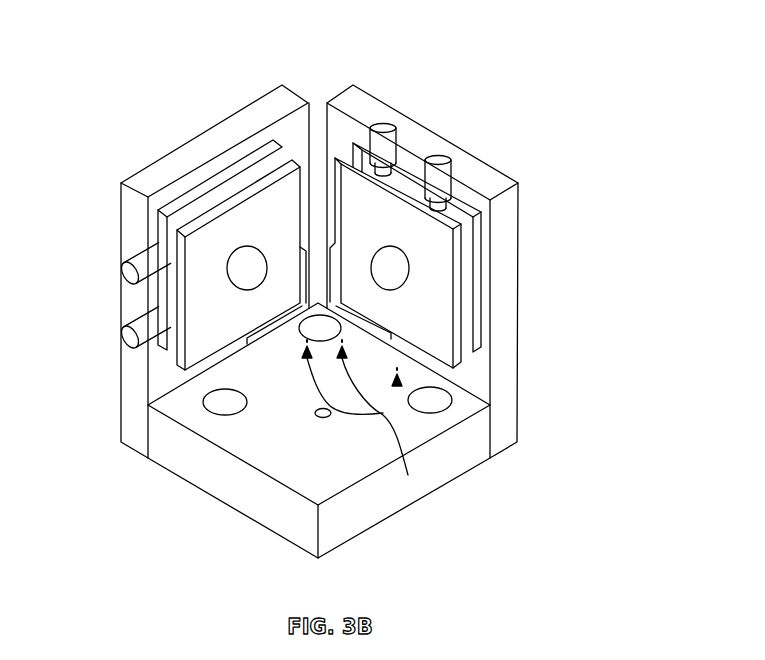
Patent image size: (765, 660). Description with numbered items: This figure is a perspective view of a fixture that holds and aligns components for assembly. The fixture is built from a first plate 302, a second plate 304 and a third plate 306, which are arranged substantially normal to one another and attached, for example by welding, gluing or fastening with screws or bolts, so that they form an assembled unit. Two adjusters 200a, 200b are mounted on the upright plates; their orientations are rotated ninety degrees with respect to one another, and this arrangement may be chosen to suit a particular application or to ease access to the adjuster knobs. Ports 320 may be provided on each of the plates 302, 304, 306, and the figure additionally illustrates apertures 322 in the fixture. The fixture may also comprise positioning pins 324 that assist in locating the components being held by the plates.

The adjuster 200a is at (283, 157).
The adjuster 200b is at (344, 150).
The first plate 302 is at (180, 148).
The second plate 304 is at (517, 343).
The third plate 306 is at (210, 496).
The port 320 is at (323, 419).
The aperture 322 is at (300, 324).
The positioning pin 324 is at (397, 386).